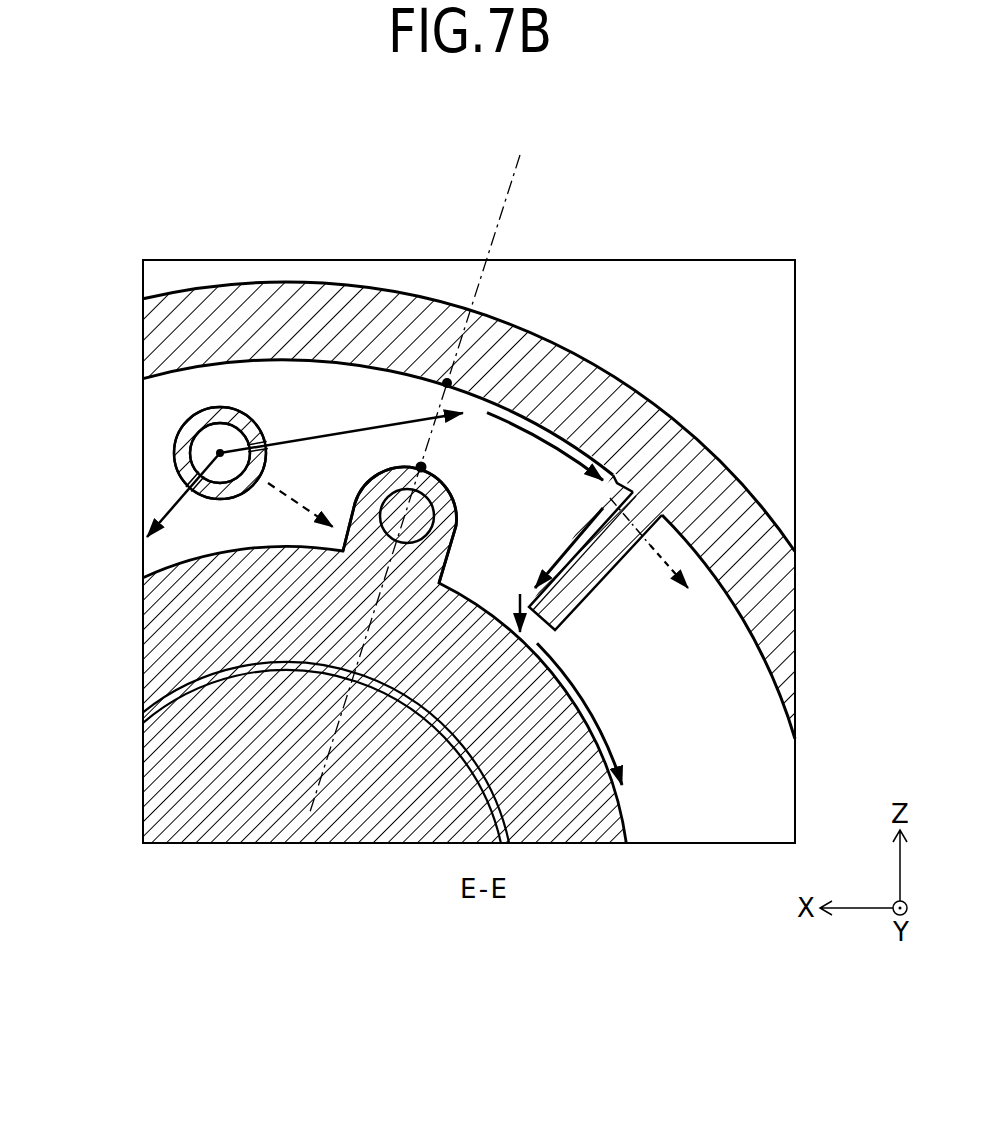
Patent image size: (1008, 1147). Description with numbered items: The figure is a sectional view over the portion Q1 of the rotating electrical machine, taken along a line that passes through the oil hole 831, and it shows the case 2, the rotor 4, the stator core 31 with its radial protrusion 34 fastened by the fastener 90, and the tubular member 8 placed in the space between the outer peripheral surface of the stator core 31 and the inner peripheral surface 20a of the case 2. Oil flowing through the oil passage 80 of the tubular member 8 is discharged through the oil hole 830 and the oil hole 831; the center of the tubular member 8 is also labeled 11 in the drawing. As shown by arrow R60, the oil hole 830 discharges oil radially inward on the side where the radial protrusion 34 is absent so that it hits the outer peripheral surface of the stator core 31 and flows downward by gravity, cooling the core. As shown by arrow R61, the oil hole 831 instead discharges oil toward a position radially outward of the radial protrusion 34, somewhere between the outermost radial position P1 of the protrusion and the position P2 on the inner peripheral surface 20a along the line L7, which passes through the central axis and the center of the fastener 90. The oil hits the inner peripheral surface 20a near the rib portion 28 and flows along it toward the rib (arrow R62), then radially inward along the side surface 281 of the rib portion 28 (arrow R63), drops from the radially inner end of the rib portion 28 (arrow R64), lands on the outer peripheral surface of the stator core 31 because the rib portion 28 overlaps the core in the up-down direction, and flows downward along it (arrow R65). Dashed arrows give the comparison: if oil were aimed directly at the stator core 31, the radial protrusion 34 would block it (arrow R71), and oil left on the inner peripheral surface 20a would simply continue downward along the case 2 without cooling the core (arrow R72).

The case 2 is at (742, 476).
The inner peripheral surface 20a is at (781, 689).
The rib portion 28 is at (578, 612).
The side surface 281 is at (636, 490).
The rotor 4 is at (425, 843).
The stator core 31 is at (571, 806).
The radial protrusion 34 is at (445, 458).
The fastener 90 is at (393, 495).
The tubular member 8 is at (191, 406).
The oil hole 830 is at (177, 462).
The oil hole 831 is at (257, 446).
The shaft 11 is at (214, 452).
The oil passage 80 is at (230, 456).
The outermost radial position P1 is at (427, 470).
The position P2 is at (450, 380).
The line L7 is at (500, 217).
The portion Q1 is at (302, 258).
The arrow R60 is at (160, 498).
The arrow R61 is at (341, 453).
The arrow R62 is at (551, 448).
The arrow R63 is at (626, 478).
The arrow R64 is at (516, 602).
The arrow R65 is at (600, 727).
The dashed arrow R71 is at (290, 500).
The dashed arrow R72 is at (648, 553).